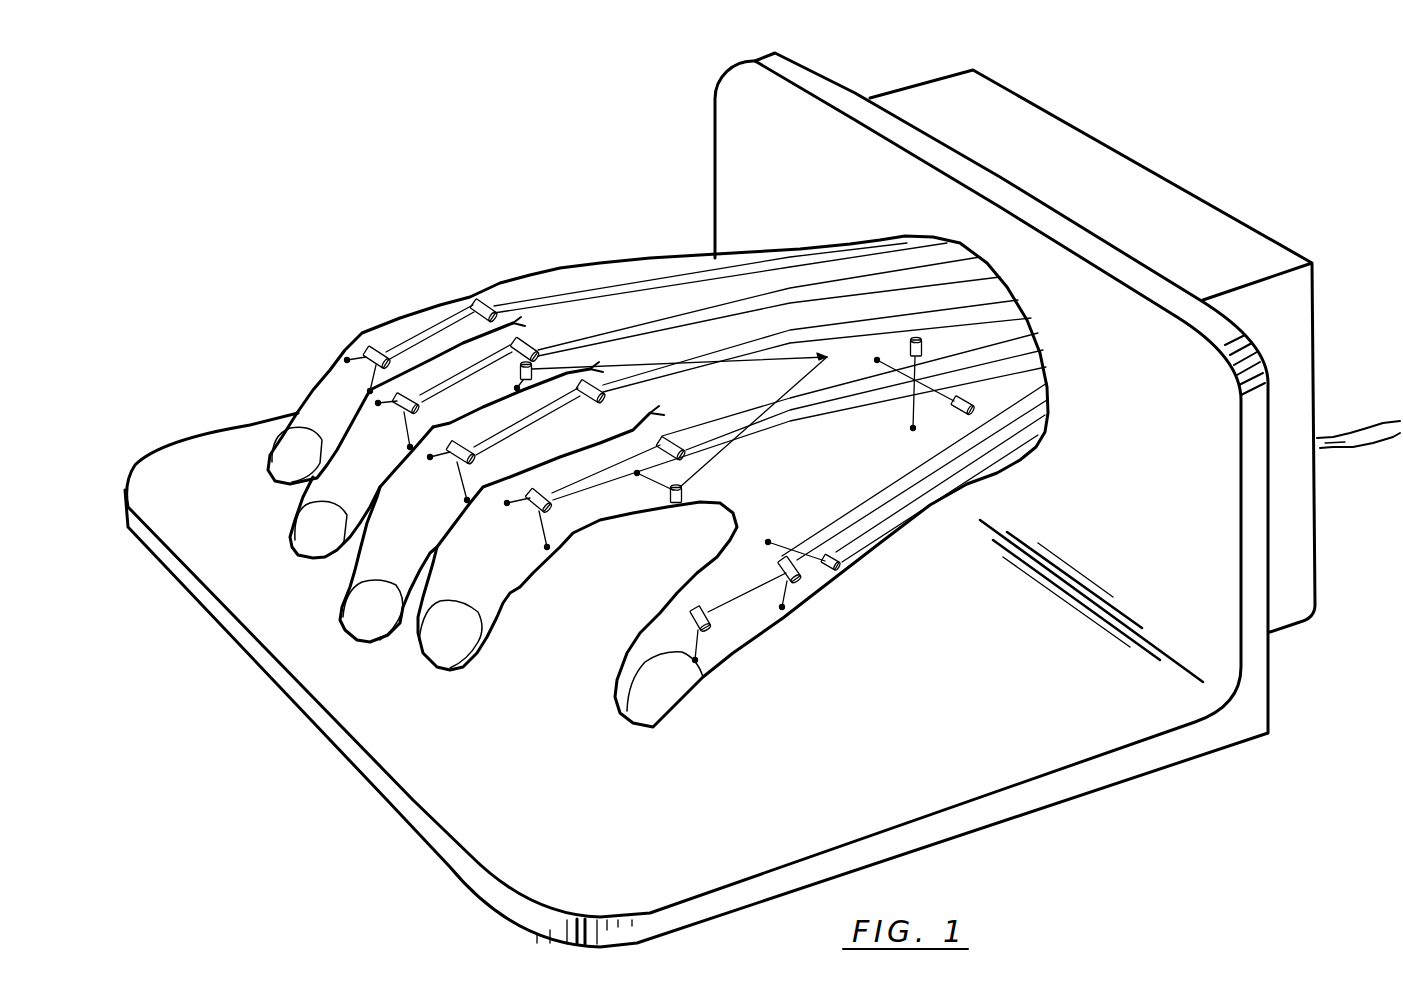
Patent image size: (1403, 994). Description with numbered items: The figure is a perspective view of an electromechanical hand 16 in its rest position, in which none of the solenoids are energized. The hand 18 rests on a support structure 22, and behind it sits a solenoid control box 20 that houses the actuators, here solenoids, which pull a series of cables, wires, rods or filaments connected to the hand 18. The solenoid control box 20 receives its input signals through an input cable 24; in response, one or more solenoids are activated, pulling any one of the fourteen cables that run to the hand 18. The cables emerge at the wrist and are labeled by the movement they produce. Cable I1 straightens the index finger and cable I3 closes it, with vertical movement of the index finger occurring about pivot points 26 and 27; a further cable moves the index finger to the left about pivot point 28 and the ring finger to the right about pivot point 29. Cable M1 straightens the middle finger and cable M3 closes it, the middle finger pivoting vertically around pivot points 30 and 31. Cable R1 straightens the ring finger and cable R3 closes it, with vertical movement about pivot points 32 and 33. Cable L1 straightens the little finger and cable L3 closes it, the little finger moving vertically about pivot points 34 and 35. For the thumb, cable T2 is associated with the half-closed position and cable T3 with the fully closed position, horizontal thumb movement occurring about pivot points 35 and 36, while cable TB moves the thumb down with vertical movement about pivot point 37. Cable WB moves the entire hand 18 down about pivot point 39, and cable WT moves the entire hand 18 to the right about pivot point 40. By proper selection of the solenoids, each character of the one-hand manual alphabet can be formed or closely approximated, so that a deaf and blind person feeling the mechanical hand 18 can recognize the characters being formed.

The electromechanical hand 16 is at (452, 219).
The hand 18 is at (573, 263).
The solenoid control box 20 is at (1152, 180).
The support structure 22 is at (1030, 797).
The input cable 24 is at (1360, 437).
The pivot point 26 is at (553, 510).
The pivot point 27 is at (663, 442).
The pivot point 28 is at (667, 500).
The pivot point 29 is at (520, 368).
The pivot point 30 is at (600, 400).
The pivot point 31 is at (477, 460).
The pivot point 32 is at (523, 340).
The pivot point 33 is at (420, 407).
The pivot point 34 is at (472, 300).
The pivot point 35 is at (366, 350).
The pivot point 36 is at (710, 627).
The pivot point 37 is at (834, 572).
The pivot point 39 is at (961, 398).
The pivot point 40 is at (908, 344).
The cable L3 is at (907, 243).
The cable L1 is at (948, 243).
The cable R3 is at (975, 253).
The cable R1 is at (983, 262).
The cable M3 is at (1000, 285).
The cable M1 is at (1008, 293).
The cable WT is at (1033, 322).
The cable I3 is at (1040, 342).
The cable I1 is at (1047, 362).
The cable WB is at (1048, 377).
The cable T2 is at (1050, 397).
The cable T3 is at (1050, 423).
The cable TB is at (1040, 453).